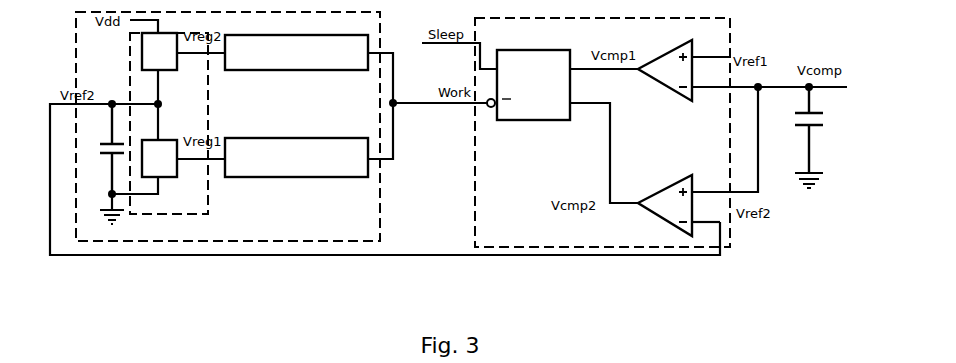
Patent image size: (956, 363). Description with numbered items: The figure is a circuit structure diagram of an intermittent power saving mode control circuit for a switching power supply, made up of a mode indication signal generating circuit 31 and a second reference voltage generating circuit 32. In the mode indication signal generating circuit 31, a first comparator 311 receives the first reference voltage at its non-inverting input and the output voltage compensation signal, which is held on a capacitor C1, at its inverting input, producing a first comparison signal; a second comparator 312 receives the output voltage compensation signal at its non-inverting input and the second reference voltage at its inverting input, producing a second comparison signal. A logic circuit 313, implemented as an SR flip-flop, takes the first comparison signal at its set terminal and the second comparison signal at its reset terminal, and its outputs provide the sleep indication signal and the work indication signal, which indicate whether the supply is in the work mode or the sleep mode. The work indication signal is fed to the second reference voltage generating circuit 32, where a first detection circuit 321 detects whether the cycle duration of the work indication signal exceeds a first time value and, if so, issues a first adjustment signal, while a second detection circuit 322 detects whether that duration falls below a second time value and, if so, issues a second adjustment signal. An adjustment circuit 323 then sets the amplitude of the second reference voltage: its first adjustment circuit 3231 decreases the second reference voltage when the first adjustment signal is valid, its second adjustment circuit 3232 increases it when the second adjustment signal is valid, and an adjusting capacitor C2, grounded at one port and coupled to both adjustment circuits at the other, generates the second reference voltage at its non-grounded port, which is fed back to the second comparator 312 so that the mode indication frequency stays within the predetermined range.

The mode indication signal generating circuit 31 is at (730, 228).
The first comparator 311 is at (668, 93).
The second comparator 312 is at (655, 214).
The logic circuit 313 is at (533, 122).
The second reference voltage generating circuit 32 is at (380, 186).
The first detection circuit 321 is at (332, 178).
The second detection circuit 322 is at (325, 71).
The adjustment circuit 323 is at (201, 214).
The first adjustment circuit 3231 is at (167, 178).
The second adjustment circuit 3232 is at (170, 71).
The capacitor C1 is at (821, 130).
The adjusting capacitor C2 is at (102, 149).